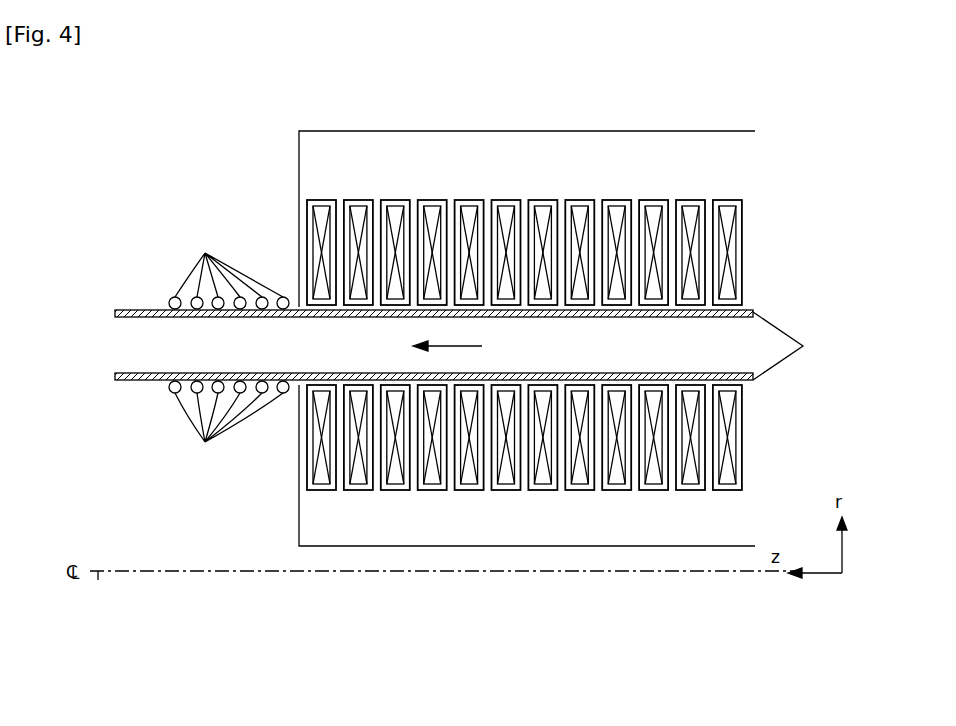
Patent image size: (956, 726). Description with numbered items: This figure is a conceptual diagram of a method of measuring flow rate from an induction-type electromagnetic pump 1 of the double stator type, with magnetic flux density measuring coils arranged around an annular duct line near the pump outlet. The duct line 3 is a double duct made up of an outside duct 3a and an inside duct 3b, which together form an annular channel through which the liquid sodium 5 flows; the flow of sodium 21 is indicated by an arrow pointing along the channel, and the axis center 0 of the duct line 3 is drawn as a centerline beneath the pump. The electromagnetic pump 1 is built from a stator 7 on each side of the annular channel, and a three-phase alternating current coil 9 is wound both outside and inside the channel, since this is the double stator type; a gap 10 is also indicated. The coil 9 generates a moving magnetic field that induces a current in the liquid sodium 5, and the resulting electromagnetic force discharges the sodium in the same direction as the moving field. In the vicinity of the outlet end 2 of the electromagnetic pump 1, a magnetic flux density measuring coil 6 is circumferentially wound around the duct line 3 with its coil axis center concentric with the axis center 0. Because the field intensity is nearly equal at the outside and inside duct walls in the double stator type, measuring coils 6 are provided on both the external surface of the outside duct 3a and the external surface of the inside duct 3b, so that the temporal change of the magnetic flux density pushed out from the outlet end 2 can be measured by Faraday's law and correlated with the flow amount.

The axis center 0 is at (99, 580).
The electromagnetic pump 1 is at (762, 121).
The outlet end 2 is at (289, 289).
The duct line 3 is at (388, 335).
The outside duct 3a is at (119, 309).
The inside duct 3b is at (409, 400).
The liquid sodium 5 is at (151, 328).
The magnetic flux density measuring coil 6 is at (229, 350).
The stator 7 is at (601, 148).
The coil 9 is at (728, 257).
The gap 10 is at (798, 346).
The flow of sodium 21 is at (450, 346).